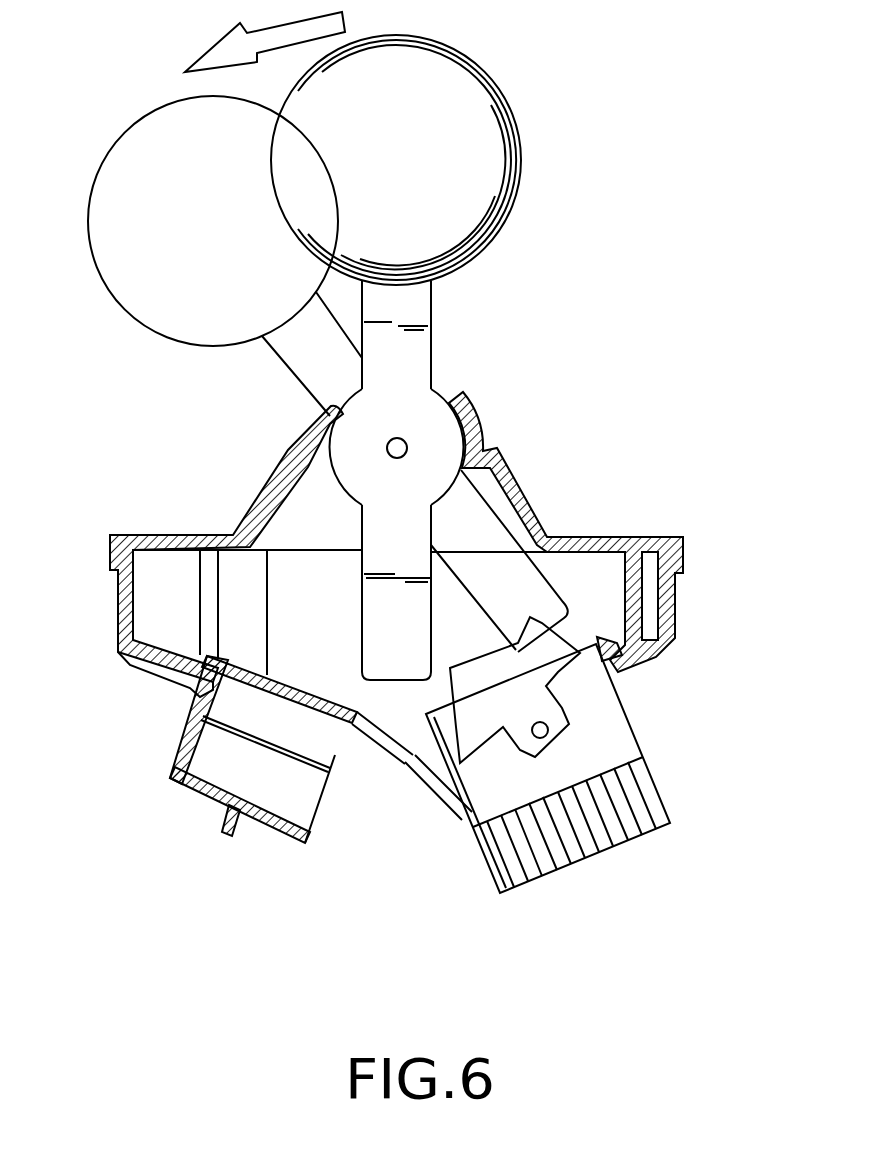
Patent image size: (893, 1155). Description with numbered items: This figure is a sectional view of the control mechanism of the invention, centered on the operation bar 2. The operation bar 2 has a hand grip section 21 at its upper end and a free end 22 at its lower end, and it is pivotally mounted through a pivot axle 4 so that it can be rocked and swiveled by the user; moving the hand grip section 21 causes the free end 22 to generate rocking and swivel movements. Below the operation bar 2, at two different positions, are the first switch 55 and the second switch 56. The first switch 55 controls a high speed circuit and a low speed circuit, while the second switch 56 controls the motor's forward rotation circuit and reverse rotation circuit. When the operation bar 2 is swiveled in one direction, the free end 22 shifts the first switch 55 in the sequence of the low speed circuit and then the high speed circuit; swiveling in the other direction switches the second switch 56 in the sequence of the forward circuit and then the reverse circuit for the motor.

The operation bar 2 is at (483, 335).
The pivot axle 4 is at (390, 448).
The hand grip section 21 is at (480, 173).
The free end 22 is at (377, 655).
The first switch 55 is at (220, 780).
The second switch 56 is at (528, 682).